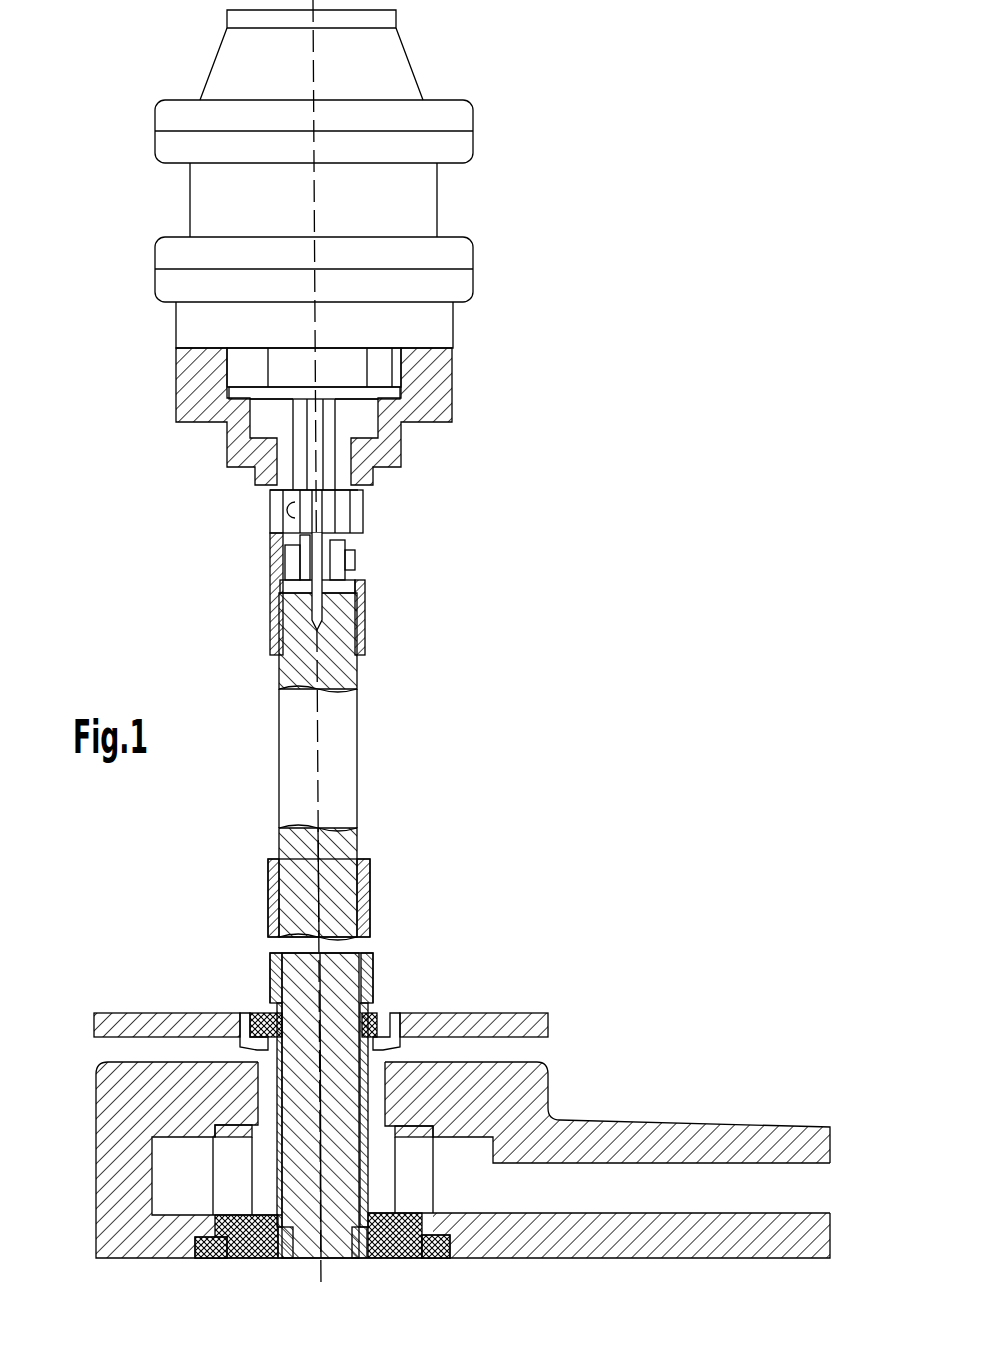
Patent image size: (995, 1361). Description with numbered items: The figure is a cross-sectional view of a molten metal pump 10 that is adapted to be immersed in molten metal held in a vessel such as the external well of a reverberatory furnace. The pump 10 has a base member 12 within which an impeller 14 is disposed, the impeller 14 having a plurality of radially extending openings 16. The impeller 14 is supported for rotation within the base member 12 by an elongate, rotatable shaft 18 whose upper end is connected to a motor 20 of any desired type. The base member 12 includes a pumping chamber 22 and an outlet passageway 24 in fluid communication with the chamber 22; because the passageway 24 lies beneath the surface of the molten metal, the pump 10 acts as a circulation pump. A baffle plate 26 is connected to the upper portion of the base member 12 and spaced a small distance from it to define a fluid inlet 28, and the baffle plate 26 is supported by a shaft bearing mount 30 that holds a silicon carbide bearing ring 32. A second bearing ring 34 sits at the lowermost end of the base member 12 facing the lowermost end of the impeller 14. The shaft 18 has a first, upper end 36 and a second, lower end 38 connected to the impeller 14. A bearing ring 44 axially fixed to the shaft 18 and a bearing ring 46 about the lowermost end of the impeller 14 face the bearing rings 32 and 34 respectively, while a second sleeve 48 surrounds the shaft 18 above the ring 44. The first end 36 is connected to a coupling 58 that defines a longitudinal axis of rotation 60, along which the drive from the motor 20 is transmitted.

The molten metal pump 10 is at (524, 237).
The base member 12 is at (537, 1083).
The impeller 14 is at (253, 1250).
The radially extending openings 16 is at (223, 1197).
The shaft 18 is at (345, 798).
The motor 20 is at (413, 207).
The pumping chamber 22 is at (163, 1197).
The outlet passageway 24 is at (817, 1192).
The baffle plate 26 is at (523, 1013).
The fluid inlet 28 is at (94, 1055).
The shaft bearing mount 30 is at (400, 1013).
The bearing ring 32 is at (380, 1013).
The second bearing ring 34 is at (438, 1257).
The first end 36 is at (397, 617).
The second end 38 is at (396, 943).
The bearing ring 44 is at (277, 1012).
The bearing ring 46 is at (427, 1257).
The second sleeve 48 is at (268, 888).
The coupling 58 is at (397, 536).
The longitudinal axis of rotation 60 is at (320, 740).